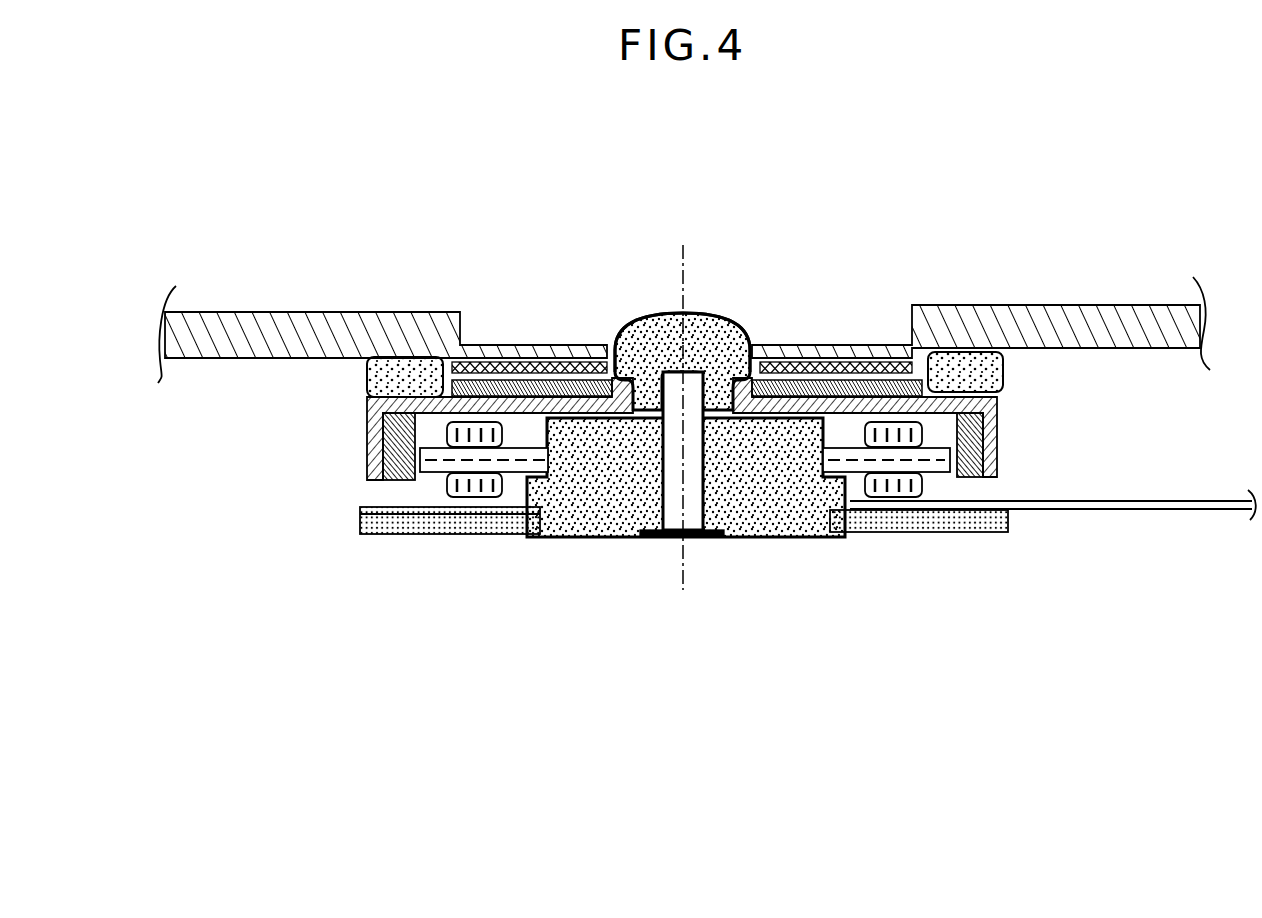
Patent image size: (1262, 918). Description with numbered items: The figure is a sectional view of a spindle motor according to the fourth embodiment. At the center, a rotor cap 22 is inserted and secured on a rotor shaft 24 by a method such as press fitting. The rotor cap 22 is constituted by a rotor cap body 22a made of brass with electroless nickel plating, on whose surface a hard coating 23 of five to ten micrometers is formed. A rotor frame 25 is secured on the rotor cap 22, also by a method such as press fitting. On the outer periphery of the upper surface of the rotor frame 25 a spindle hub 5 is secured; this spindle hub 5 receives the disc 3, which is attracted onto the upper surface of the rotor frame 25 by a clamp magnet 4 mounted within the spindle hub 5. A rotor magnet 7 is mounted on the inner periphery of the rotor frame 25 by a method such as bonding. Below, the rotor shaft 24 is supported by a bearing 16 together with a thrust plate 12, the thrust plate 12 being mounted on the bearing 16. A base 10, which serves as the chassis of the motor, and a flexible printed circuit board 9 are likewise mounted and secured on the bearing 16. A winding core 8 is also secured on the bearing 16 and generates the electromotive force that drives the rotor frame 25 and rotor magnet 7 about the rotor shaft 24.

The disc 3 is at (1033, 320).
The clamp magnet 4 is at (861, 375).
The spindle hub 5 is at (1002, 375).
The rotor magnet 7 is at (985, 485).
The winding core 8 is at (905, 462).
The flexible printed circuit board 9 is at (1165, 510).
The base 10 is at (960, 522).
The thrust plate 12 is at (710, 537).
The bearing 16 is at (567, 515).
The rotor cap 22 is at (722, 264).
The rotor cap body 22a is at (706, 316).
The hard coating 23 is at (692, 216).
The rotor shaft 24 is at (653, 480).
The rotor frame 25 is at (1000, 437).